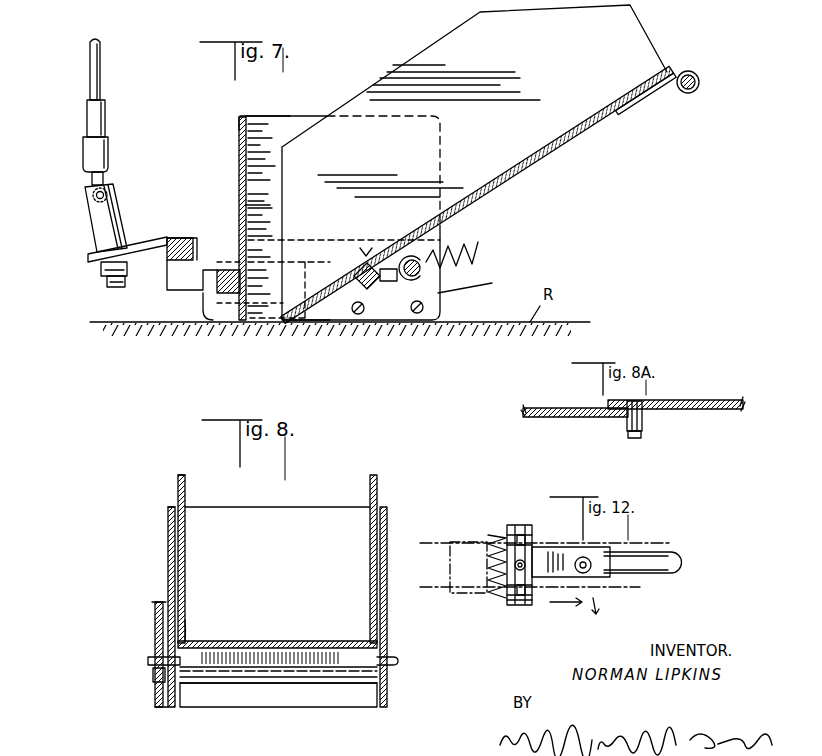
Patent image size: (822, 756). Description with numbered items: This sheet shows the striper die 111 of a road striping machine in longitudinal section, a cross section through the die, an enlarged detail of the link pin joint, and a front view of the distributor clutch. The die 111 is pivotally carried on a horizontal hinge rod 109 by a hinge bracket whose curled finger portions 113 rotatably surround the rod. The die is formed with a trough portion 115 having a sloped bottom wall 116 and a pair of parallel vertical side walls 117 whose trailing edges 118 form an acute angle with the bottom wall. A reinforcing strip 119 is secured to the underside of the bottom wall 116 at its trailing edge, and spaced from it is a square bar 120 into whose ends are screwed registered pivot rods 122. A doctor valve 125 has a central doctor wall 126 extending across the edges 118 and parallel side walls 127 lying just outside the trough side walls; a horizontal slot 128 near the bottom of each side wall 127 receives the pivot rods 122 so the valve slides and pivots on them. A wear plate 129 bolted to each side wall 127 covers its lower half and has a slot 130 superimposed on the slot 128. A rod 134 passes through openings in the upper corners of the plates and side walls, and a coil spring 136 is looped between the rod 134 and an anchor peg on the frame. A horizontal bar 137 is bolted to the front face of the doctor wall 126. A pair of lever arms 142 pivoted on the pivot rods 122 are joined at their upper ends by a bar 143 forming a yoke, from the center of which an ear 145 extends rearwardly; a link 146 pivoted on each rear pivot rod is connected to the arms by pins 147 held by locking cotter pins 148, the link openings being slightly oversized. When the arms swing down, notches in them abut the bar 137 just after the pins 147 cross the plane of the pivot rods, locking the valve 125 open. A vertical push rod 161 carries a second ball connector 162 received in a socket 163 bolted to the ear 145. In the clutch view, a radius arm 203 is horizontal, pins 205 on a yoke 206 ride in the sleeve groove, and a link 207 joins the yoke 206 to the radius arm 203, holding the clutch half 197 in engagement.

In FIG. 7, the hinge rod 109 is at (700, 86).
In FIG. 7, the striper die 111 is at (232, 120).
In FIG. 7, the curled finger portions 113 is at (687, 72).
In FIG. 7, the trough portion 115 is at (395, 70).
In FIG. 8, the trough portion 115 is at (176, 476).
In FIG. 7, the sloped bottom wall 116 is at (566, 139).
In FIG. 8, the sloped bottom wall 116 is at (330, 641).
In FIG. 8, the side walls 117 is at (185, 492).
In FIG. 7, the trailing edges 118 is at (240, 187).
In FIG. 7, the reinforcing strip 119 is at (304, 326).
In FIG. 8, the reinforcing strip 119 is at (240, 698).
In FIG. 7, the bar 120 is at (387, 288).
In FIG. 8, the bar 120 is at (290, 682).
In FIG. 8, the pivot rods 122 is at (150, 661).
In FIG. 7, the doctor valve 125 is at (290, 116).
In FIG. 8, the doctor valve 125 is at (168, 507).
In FIG. 7, the doctor wall 126 is at (240, 205).
In FIG. 8, the side walls 127 is at (168, 566).
In FIG. 7, the horizontal slot 128 is at (418, 281).
In FIG. 8, the horizontal slot 128 is at (188, 642).
In FIG. 7, the wear plate 129 is at (413, 240).
In FIG. 8, the wear plate 129 is at (162, 707).
In FIG. 8, the horizontal slots 130 is at (156, 680).
In FIG. 7, the rod 134 is at (470, 274).
In FIG. 7, the coil spring 136 is at (478, 250).
In FIG. 7, the horizontal bar 137 is at (198, 320).
In FIG. 8A, the lever arms 142 is at (700, 410).
In FIG. 7, the bar 143 is at (170, 290).
In FIG. 7, the ear 145 is at (155, 243).
In FIG. 7, the link 146 is at (227, 262).
In FIG. 8, the link 146 is at (158, 633).
In FIG. 8A, the link 146 is at (570, 417).
In FIG. 8A, the pins 147 is at (640, 438).
In FIG. 8A, the locking cotter pin 148 is at (628, 428).
In FIG. 7, the push rod 161 is at (93, 76).
In FIG. 7, the second ball connector 162 is at (88, 153).
In FIG. 7, the socket 163 is at (100, 223).
In FIG. 12, the clutch half 197 is at (472, 593).
In FIG. 12, the radius arm 203 is at (652, 560).
In FIG. 12, the pins 205 is at (517, 538).
In FIG. 12, the yoke 206 is at (536, 604).
In FIG. 12, the link 207 is at (564, 560).